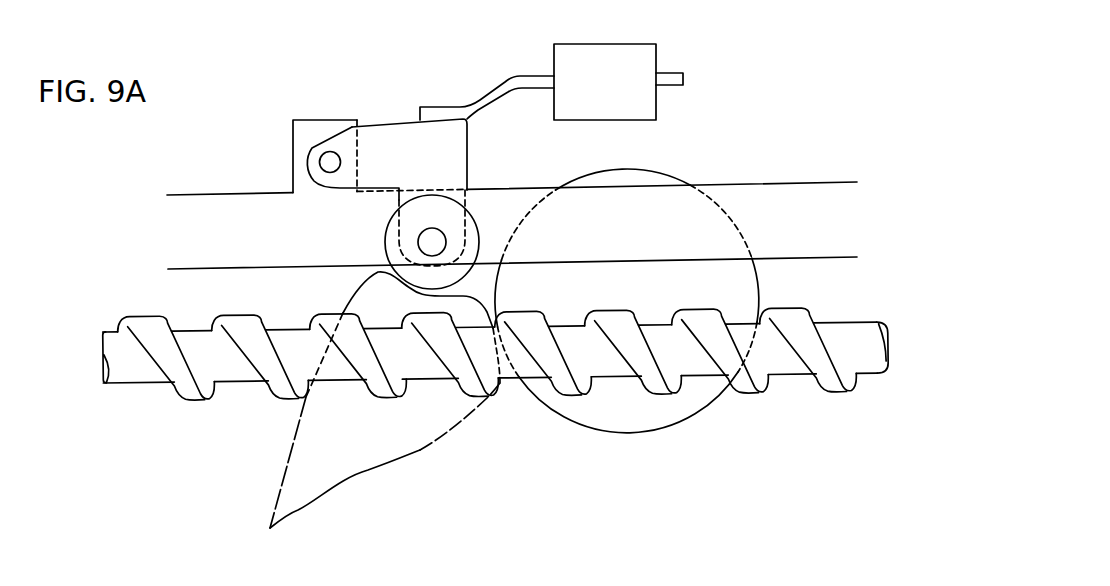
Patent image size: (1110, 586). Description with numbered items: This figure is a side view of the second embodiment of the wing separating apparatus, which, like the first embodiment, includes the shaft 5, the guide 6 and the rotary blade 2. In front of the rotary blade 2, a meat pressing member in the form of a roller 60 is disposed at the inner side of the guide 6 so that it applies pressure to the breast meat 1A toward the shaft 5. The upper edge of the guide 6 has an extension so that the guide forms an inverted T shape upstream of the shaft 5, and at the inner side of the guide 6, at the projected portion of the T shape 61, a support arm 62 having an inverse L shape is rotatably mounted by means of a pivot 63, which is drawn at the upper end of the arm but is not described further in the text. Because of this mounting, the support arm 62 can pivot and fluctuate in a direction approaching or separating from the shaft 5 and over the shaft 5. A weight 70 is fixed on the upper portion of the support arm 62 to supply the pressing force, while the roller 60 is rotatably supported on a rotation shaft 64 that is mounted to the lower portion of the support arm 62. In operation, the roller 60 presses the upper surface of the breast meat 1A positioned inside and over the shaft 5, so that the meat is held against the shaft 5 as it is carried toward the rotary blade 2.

The breast meat 1A is at (412, 435).
The rotary blade 2 is at (611, 456).
The shaft 5 is at (776, 421).
The guide 6 is at (764, 158).
The roller 60 is at (485, 206).
The projected portion of the T shape 61 is at (307, 120).
The support arm 62 is at (468, 152).
The pivot pin 63 is at (327, 152).
The rotation shaft 64 is at (418, 242).
The weight 70 is at (660, 57).